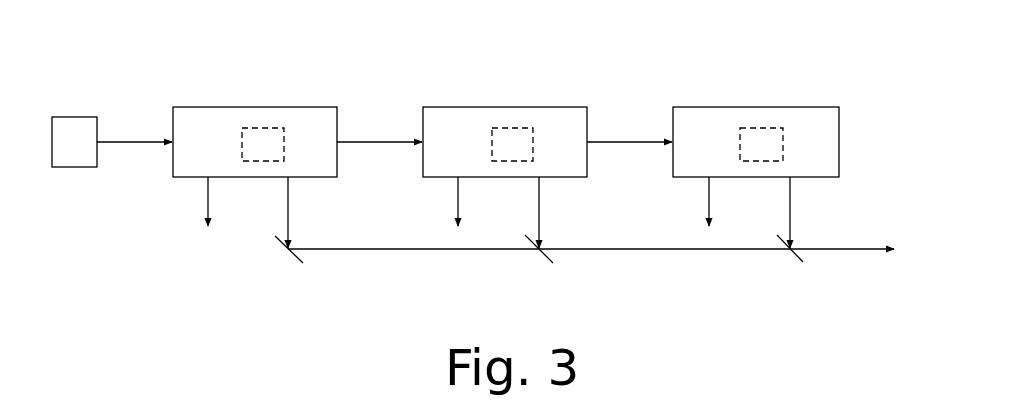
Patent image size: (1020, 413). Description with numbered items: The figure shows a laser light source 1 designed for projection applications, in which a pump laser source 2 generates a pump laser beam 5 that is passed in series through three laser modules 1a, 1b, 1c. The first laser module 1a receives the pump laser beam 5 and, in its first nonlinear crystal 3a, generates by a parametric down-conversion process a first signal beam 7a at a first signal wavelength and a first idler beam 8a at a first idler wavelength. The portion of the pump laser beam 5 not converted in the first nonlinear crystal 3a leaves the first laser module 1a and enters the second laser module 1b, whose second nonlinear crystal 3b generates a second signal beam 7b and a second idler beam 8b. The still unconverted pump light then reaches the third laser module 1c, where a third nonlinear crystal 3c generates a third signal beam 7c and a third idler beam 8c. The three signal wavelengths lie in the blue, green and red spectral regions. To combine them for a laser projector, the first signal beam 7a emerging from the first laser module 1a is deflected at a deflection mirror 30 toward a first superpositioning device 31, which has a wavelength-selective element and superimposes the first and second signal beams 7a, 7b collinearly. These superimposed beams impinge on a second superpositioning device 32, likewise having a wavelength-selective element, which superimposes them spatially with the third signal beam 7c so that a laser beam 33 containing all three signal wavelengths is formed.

The laser light source 1 is at (157, 72).
The pump laser source 2 is at (75, 117).
The pump laser beam 5 is at (137, 143).
The first laser module 1a is at (225, 107).
The second laser module 1b is at (475, 107).
The third laser module 1c is at (725, 107).
The first nonlinear crystal 3a is at (268, 131).
The second nonlinear crystal 3b is at (520, 131).
The third nonlinear crystal 3c is at (768, 131).
The first idler beam 8a is at (205, 198).
The second idler beam 8b is at (455, 198).
The third idler beam 8c is at (705, 198).
The first signal beam 7a is at (287, 216).
The second signal beam 7b is at (538, 218).
The third signal beam 7c is at (789, 218).
The deflection mirror 30 is at (291, 264).
The first superpositioning device 31 is at (541, 264).
The second superpositioning device 32 is at (791, 264).
The laser beam 33 is at (860, 248).